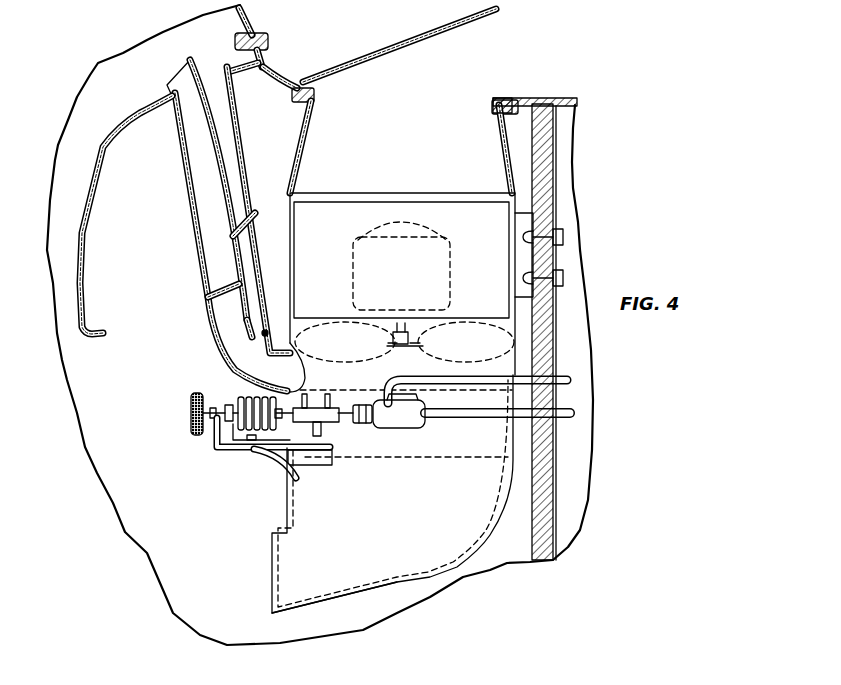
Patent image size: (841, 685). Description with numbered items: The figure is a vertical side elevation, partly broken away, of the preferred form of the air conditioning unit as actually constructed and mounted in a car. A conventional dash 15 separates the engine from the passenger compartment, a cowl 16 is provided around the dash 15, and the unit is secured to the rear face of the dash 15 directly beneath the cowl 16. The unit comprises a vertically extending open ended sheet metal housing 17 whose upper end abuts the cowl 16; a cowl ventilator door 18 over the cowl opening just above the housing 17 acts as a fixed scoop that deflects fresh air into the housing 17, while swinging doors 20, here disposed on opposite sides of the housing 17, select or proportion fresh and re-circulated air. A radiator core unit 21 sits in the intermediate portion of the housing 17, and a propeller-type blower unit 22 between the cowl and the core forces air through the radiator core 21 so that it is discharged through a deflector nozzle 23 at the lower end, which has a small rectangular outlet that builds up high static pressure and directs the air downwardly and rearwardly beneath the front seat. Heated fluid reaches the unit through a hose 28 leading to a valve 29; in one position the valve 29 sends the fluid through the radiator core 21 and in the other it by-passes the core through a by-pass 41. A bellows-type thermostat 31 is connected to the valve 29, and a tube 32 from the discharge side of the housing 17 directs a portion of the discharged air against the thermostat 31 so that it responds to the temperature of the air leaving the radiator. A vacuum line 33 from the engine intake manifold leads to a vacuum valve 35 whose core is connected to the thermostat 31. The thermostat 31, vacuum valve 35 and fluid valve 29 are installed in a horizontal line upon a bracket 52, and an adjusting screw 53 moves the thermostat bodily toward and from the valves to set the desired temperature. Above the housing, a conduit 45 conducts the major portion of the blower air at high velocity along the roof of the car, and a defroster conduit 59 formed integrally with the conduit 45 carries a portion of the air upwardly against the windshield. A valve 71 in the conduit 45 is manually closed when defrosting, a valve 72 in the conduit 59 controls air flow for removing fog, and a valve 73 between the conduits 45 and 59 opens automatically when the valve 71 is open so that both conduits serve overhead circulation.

The dash 15 is at (557, 169).
The cowl 16 is at (532, 99).
The housing 17 is at (392, 494).
The cowl ventilator door 18 is at (389, 51).
The swinging doors 20 is at (411, 284).
The radiator core unit 21 is at (446, 461).
The blower unit 22 is at (450, 273).
The deflector nozzle 23 is at (290, 606).
The hose 28 is at (497, 421).
The valve 29 is at (399, 411).
The bellows-type thermostat 31 is at (244, 397).
The tube 32 is at (276, 484).
The vacuum line 33 is at (320, 432).
The vacuum valve 35 is at (370, 405).
The by-pass 41 is at (410, 363).
The conduit 45 is at (206, 194).
The bracket 52 is at (243, 456).
The adjusting screw 53 is at (191, 430).
The defroster conduit 59 is at (232, 159).
The valve 71 is at (206, 297).
The valve 72 is at (250, 338).
The valve 73 is at (240, 229).